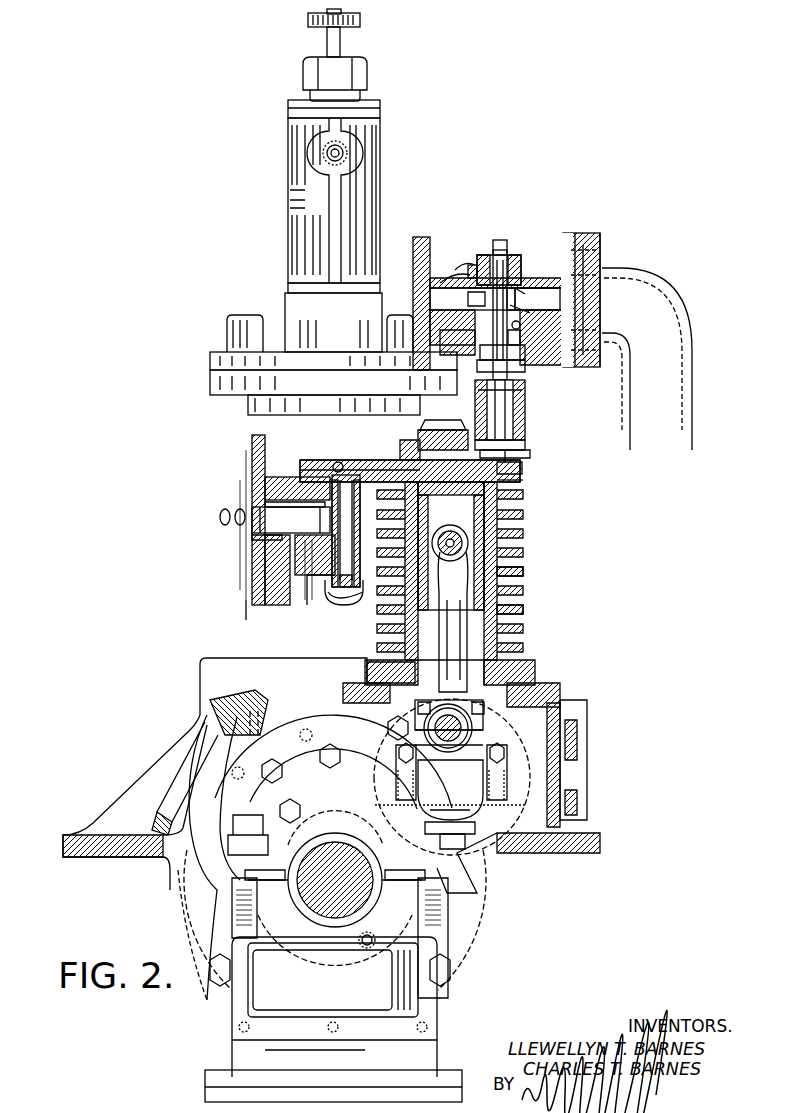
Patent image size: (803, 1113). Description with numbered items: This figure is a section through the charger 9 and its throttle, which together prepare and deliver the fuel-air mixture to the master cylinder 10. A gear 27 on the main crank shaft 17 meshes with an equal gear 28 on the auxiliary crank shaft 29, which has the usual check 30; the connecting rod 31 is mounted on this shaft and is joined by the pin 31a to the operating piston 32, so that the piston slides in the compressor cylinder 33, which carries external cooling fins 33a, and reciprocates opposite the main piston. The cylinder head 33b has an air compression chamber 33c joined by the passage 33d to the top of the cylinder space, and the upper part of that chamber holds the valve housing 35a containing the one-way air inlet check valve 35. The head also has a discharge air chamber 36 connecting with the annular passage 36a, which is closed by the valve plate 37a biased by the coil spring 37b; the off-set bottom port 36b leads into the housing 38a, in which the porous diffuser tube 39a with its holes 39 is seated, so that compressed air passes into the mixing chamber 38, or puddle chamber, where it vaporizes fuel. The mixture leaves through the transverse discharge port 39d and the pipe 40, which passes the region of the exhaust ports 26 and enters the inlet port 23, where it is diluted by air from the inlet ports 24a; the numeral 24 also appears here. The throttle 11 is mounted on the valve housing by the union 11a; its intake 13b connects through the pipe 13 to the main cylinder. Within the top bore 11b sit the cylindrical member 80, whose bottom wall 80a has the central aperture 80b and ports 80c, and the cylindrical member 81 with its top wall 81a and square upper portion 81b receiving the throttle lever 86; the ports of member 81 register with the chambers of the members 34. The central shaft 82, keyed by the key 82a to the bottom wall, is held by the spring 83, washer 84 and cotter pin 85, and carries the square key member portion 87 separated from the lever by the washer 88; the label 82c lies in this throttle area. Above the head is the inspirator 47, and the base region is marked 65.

The inspirator 47 is at (379, 164).
The throttle 11 is at (518, 255).
The throttle lever 86 is at (474, 262).
The washer 88 is at (487, 255).
The square key member portion 87 is at (506, 242).
The central shaft 82 is at (525, 256).
The top wall 81a is at (470, 268).
The cylindrical member 81 is at (469, 275).
The upper portion of wall 81a 81b is at (515, 287).
The key 82a is at (520, 294).
The cylindrical member 80 is at (521, 297).
The ports 80c is at (516, 309).
The intake 13b is at (430, 284).
The top bore 11b is at (468, 301).
The bottom wall 80a is at (478, 348).
The valve disc opening 82c is at (520, 328).
The central aperture 80b is at (515, 340).
The washer 84 is at (517, 357).
The cotter pin 85 is at (522, 368).
The members 34 is at (567, 372).
The spring 83 is at (480, 380).
The union 11a is at (526, 383).
The pipe 13 is at (697, 362).
The valve plate 37a is at (487, 432).
The valve housing 35a is at (525, 440).
The air compression chamber 33c is at (524, 457).
The one-way air inlet check valve 35 is at (529, 470).
The cylinder head 33b is at (519, 473).
The passage 33d is at (514, 492).
The operating piston 32 is at (512, 526).
The charger 9 is at (545, 554).
The compressor cylinder 33 is at (521, 564).
The cooling fins 33a is at (520, 608).
The pin 31a is at (450, 535).
The connecting rod 31 is at (457, 642).
The master cylinder 10 is at (256, 452).
The exhaust ports 26 is at (300, 492).
The off-set bottom port 36b is at (332, 463).
The discharge air chamber 36 is at (337, 459).
The coil spring 37b is at (403, 450).
The annular passage 36a is at (420, 467).
The transverse discharge port 39d is at (268, 485).
The inlet ports 24a is at (220, 515).
The inlet port 23 is at (250, 535).
The pipe 40 is at (305, 520).
The housing 38a is at (363, 533).
The diffuser tube 39a is at (356, 553).
The holes 39 is at (335, 576).
The mixing chamber 38 is at (357, 588).
The inlet chamber 24 is at (262, 597).
The gear 28 is at (404, 733).
The auxiliary crank shaft 29 is at (465, 730).
The check 30 is at (459, 783).
The gear 27 is at (312, 798).
The main crank shaft 17 is at (353, 865).
The crankcase base 65 is at (348, 1001).